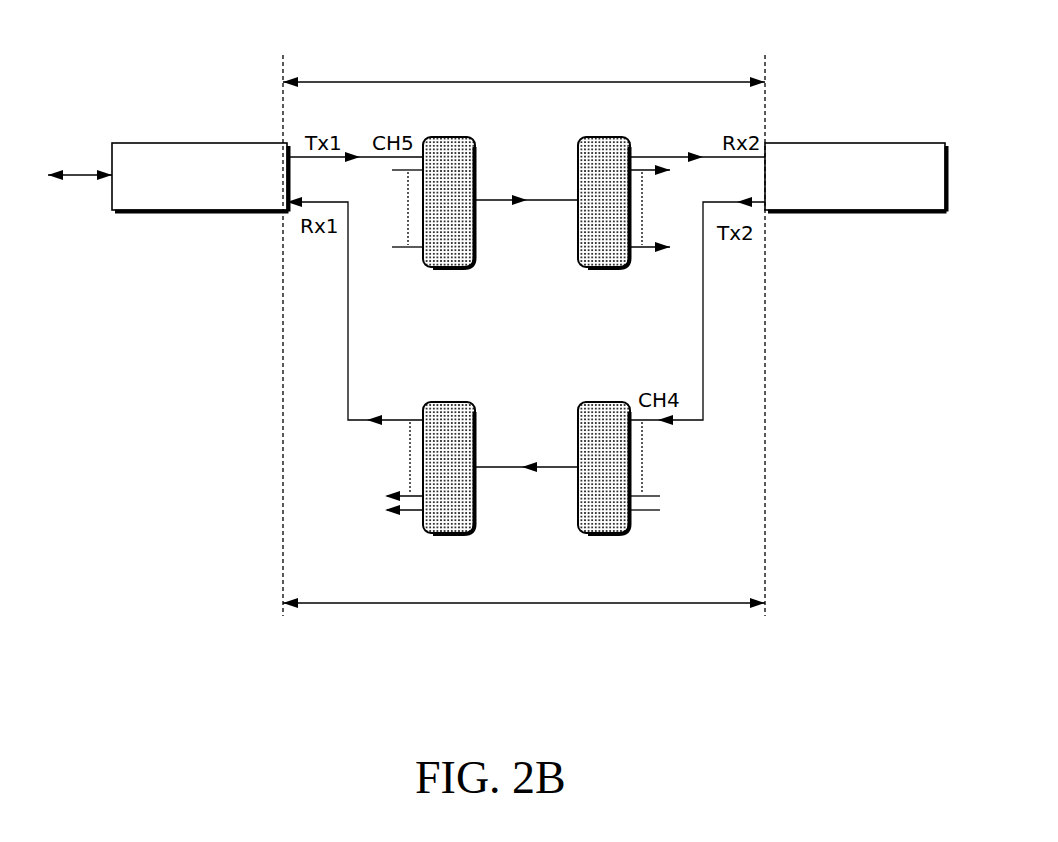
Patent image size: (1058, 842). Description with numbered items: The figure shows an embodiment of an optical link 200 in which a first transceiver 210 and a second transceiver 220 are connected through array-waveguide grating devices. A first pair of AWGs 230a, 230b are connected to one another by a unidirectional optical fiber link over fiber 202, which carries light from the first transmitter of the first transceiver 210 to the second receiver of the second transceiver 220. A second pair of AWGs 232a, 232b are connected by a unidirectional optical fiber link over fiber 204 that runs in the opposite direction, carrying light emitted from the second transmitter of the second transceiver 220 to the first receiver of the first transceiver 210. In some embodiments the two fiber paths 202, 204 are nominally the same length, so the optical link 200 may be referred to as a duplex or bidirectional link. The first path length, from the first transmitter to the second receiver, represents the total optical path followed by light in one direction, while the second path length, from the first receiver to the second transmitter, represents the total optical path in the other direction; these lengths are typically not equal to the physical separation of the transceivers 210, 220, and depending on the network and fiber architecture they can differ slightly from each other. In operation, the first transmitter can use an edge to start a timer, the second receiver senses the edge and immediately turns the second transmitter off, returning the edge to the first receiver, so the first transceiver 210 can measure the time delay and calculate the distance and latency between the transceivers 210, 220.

The optical link 200 is at (158, 78).
The first transceiver 210 is at (188, 212).
The second transceiver 220 is at (853, 212).
The first array-waveguide grating device 230a is at (447, 268).
The second array-waveguide grating device 230b is at (600, 268).
The third array-waveguide grating device 232a is at (600, 534).
The fourth array-waveguide grating device 232b is at (447, 534).
The fiber 202 is at (505, 202).
The fiber 204 is at (520, 469).